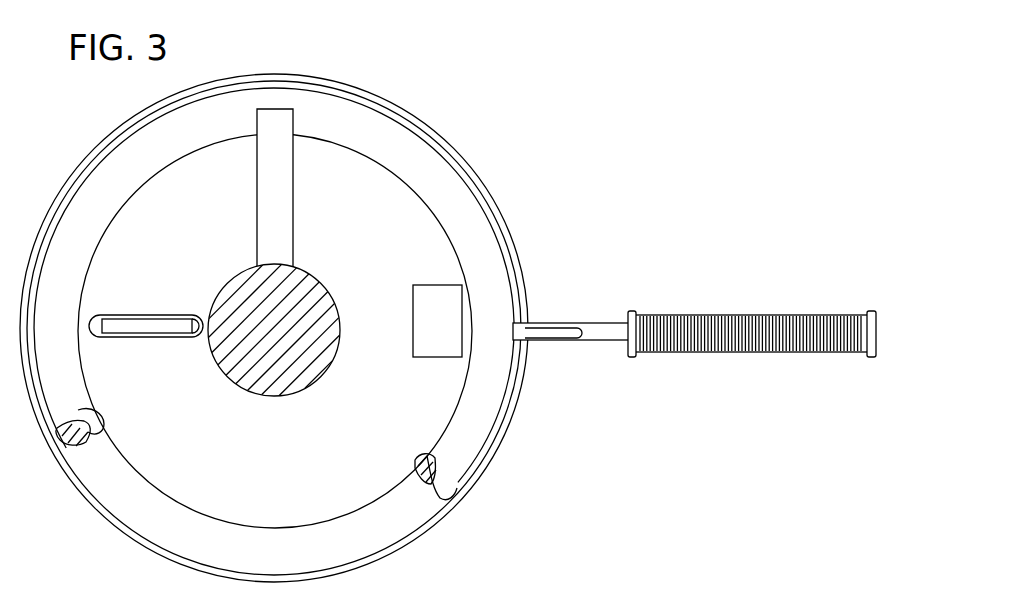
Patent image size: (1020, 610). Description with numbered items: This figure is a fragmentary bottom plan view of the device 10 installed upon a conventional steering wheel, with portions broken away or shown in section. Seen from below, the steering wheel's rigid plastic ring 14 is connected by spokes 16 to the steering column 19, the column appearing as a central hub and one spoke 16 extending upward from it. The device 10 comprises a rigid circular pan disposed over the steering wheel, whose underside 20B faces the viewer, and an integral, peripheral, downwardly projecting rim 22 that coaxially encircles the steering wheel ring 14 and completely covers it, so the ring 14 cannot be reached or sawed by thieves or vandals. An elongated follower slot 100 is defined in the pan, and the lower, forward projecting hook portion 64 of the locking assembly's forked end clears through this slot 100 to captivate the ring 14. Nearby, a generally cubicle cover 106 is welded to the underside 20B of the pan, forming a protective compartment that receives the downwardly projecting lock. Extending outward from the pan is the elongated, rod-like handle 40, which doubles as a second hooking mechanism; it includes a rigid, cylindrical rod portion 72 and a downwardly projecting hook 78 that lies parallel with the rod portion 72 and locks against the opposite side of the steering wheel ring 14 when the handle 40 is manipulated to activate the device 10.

The device 10 is at (587, 45).
The steering wheel ring 14 is at (80, 410).
The spokes 16 is at (270, 187).
The steering column 19 is at (250, 300).
The underside of pan 20B is at (324, 517).
The rim 22 is at (120, 527).
The handle 40 is at (782, 303).
The hook portion 64 is at (167, 328).
The rod portion 72 is at (610, 330).
The hook 78 is at (548, 333).
The follower slot 100 is at (94, 322).
The cover 106 is at (433, 297).